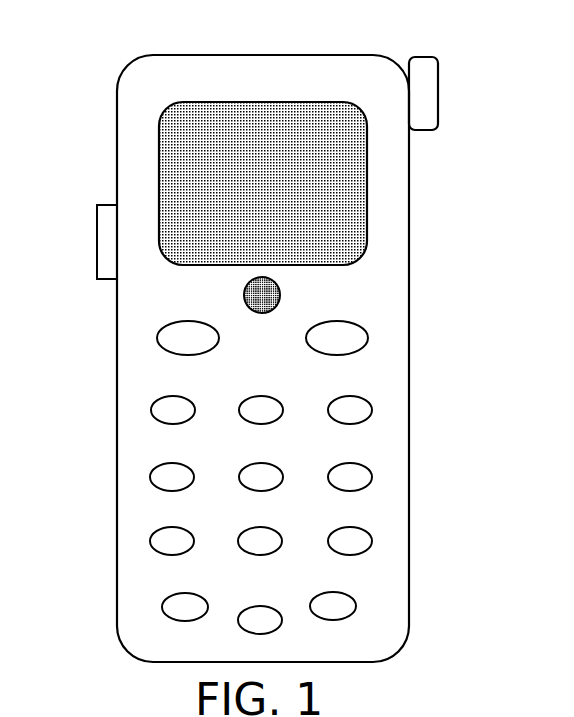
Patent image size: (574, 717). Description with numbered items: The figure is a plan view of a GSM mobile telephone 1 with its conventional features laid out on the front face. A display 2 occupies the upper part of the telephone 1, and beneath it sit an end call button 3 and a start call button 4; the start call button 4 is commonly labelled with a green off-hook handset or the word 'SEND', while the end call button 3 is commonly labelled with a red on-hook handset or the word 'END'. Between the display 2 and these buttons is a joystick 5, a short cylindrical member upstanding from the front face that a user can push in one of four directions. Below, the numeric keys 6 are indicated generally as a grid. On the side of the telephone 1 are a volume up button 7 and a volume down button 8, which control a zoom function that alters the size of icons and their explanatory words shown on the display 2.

The mobile telephone 1 is at (145, 92).
The display 2 is at (367, 197).
The end call button 3 is at (158, 338).
The start call button 4 is at (362, 336).
The joystick 5 is at (280, 294).
The numeric keys 6 is at (152, 410).
The volume up button 7 is at (97, 220).
The volume down button 8 is at (97, 265).